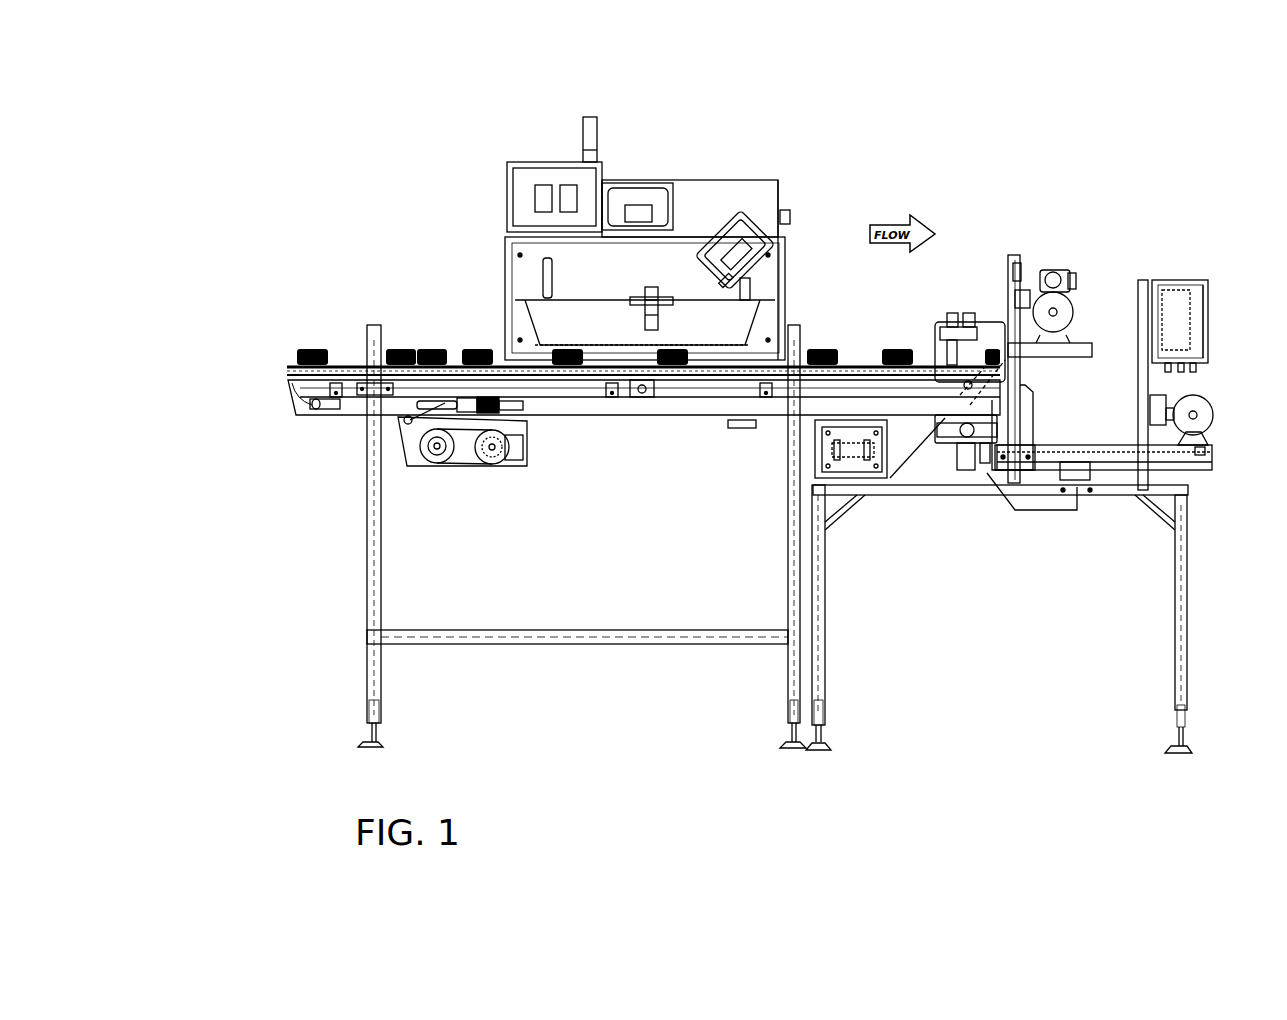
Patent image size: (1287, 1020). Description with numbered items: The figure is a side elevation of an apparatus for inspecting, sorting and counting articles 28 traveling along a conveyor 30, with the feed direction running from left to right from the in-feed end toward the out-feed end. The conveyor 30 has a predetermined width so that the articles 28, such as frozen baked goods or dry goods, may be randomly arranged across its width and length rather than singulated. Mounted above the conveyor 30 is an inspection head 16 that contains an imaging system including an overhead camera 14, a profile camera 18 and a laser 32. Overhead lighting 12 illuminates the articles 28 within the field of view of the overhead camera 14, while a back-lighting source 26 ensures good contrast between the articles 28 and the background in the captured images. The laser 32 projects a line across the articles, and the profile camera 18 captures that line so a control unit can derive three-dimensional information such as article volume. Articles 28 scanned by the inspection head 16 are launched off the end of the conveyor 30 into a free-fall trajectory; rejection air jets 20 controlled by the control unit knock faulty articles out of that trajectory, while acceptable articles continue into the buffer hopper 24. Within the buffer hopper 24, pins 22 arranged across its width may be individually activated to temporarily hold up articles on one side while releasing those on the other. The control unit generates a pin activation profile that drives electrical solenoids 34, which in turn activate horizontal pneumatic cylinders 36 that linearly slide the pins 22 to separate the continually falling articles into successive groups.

The overhead lighting 12 is at (640, 283).
The overhead camera 14 is at (646, 199).
The inspection head 16 is at (709, 187).
The profile camera 18 is at (736, 247).
The rejection air jets 20 is at (988, 352).
The pins 22 is at (1018, 453).
The buffer hopper 24 is at (1000, 520).
The back-lighting source 26 is at (644, 413).
The articles 28 is at (287, 367).
The conveyor 30 is at (356, 371).
The laser 32 is at (567, 262).
The electrical solenoids 34 is at (1170, 397).
The horizontal pneumatic cylinders 36 is at (1108, 464).